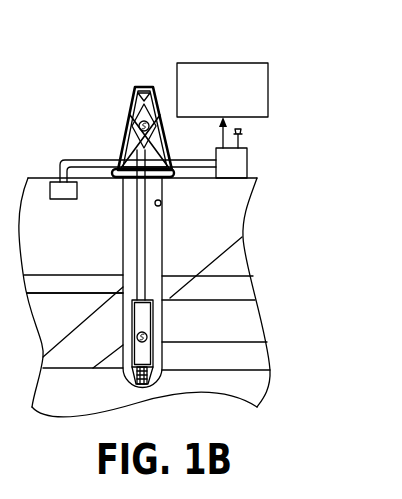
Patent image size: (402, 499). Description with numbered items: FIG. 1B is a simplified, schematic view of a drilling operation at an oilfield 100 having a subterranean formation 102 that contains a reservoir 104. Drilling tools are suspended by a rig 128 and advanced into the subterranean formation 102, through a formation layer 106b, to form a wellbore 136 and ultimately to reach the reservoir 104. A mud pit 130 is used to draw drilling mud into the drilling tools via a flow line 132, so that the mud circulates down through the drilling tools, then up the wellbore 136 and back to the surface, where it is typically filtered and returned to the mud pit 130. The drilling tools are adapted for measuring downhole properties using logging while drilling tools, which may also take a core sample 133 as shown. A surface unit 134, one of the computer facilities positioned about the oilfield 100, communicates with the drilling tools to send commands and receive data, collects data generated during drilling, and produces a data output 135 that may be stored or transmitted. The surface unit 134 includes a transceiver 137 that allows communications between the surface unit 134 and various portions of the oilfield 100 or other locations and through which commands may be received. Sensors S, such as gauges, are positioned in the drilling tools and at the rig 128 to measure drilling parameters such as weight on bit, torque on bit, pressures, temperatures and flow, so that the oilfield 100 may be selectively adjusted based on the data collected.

The oilfield 100 is at (72, 91).
The subterranean formation 102 is at (174, 268).
The reservoir 104 is at (234, 337).
The subterranean formation layer 106b is at (132, 334).
The rig 128 is at (131, 128).
The mud pit 130 is at (61, 201).
The flow line 132 is at (59, 169).
The core sample 133 is at (130, 385).
The surface unit 134 is at (248, 163).
The data output 135 is at (222, 62).
The wellbore 136 is at (161, 203).
The transceiver 137 is at (241, 141).
The sensor S is at (133, 101).